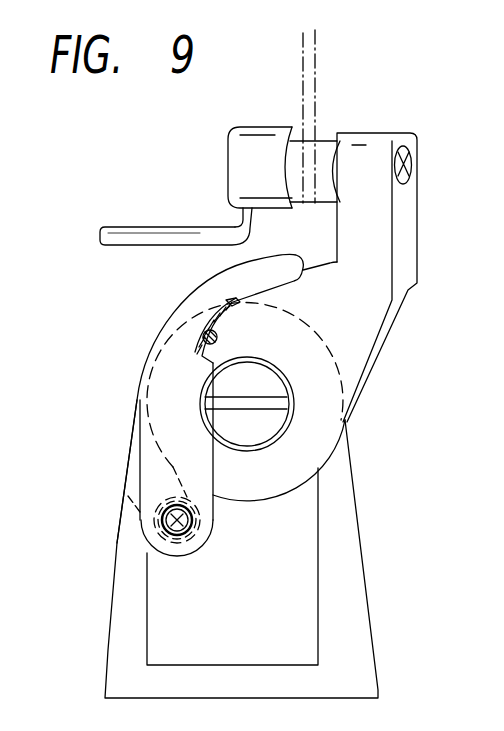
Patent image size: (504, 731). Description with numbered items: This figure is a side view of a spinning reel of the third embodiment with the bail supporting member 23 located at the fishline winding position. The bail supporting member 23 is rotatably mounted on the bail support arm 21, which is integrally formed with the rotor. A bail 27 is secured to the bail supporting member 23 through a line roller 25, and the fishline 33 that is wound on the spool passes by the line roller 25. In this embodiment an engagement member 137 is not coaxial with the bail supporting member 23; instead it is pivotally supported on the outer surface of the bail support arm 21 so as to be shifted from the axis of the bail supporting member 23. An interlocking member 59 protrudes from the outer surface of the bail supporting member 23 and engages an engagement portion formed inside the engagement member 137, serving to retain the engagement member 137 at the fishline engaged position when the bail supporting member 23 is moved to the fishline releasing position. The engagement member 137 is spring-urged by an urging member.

The bail support arm 21 is at (120, 610).
The bail supporting member 23 is at (353, 323).
The line roller 25 is at (333, 145).
The bail 27 is at (135, 235).
The fishline 33 is at (317, 64).
The interlocking member 59 is at (217, 338).
The engagement member 137 is at (155, 460).